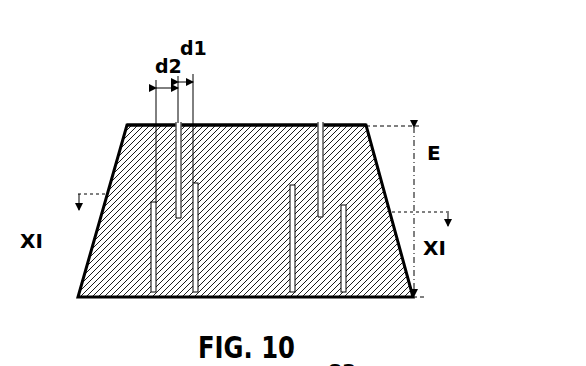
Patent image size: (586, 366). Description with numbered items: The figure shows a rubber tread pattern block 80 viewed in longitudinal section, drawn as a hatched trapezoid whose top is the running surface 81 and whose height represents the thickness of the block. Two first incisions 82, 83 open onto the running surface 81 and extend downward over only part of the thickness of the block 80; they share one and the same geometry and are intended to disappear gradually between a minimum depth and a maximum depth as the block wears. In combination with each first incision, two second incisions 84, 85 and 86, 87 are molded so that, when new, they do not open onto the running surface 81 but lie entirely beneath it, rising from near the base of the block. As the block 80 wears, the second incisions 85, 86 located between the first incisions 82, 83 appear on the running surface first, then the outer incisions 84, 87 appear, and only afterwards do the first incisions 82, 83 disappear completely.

The block 80 is at (386, 101).
The running surface 81 is at (243, 124).
The first incision 82 is at (165, 124).
The first incision 83 is at (318, 124).
The second incision 84 is at (344, 287).
The second incision 85 is at (292, 282).
The second incision 86 is at (195, 285).
The second incision 87 is at (153, 286).